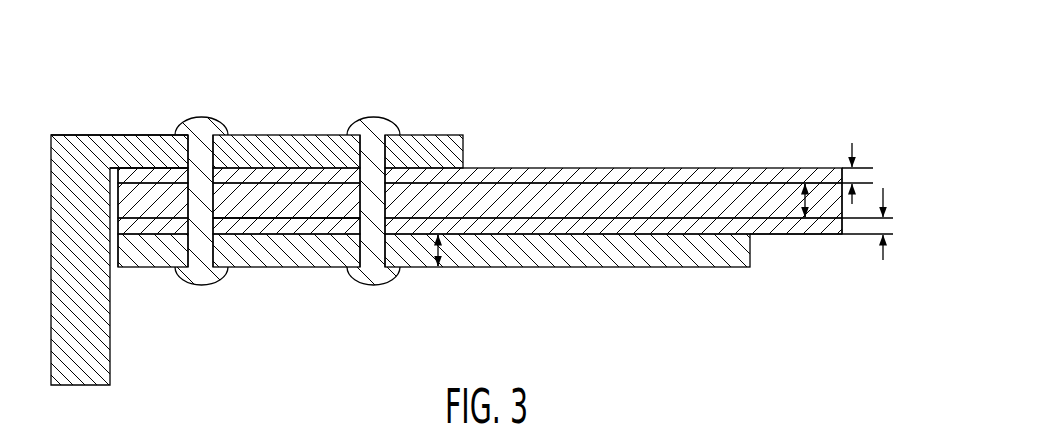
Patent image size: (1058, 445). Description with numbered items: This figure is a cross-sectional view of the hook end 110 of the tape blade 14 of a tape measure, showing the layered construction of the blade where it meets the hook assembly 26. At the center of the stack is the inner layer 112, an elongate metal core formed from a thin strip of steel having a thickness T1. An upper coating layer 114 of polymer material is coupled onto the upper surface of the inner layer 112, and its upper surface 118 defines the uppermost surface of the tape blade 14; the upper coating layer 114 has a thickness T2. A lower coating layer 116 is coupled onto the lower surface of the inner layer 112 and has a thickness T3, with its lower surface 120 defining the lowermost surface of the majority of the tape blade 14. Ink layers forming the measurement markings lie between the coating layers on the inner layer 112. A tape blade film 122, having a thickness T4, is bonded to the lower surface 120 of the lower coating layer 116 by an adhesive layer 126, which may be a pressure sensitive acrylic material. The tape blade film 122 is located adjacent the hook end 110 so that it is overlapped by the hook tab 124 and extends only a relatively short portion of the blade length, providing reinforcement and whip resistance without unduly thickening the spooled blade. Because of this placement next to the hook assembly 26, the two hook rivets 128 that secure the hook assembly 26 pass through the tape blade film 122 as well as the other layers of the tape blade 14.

The tape blade 14 is at (831, 51).
The hook assembly 26 is at (146, 132).
The hook end 110 is at (82, 97).
The inner layer 112 is at (641, 192).
The upper coating layer 114 is at (561, 179).
The lower coating layer 116 is at (802, 236).
The upper surface 118 is at (498, 166).
The lower surface 120 is at (831, 239).
The tape blade film 122 is at (507, 258).
The hook tab 124 is at (435, 135).
The adhesive layer 126 is at (287, 218).
The hook rivets 128 is at (354, 117).
The thickness of inner layer T1 is at (805, 184).
The thickness of upper coating layer T2 is at (853, 152).
The thickness of lower coating layer T3 is at (885, 202).
The thickness of tape blade film T4 is at (438, 262).